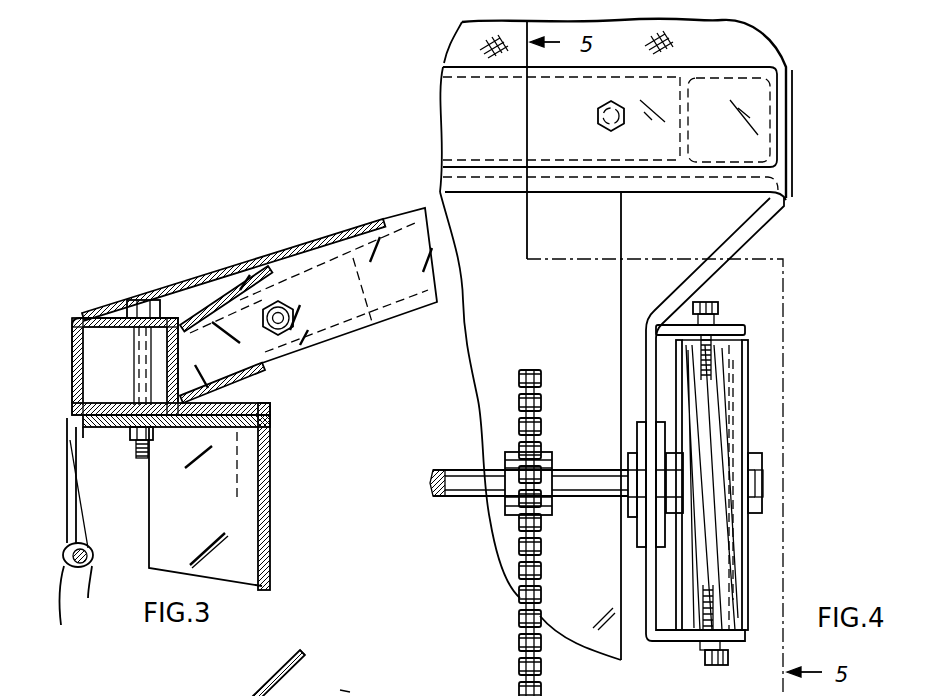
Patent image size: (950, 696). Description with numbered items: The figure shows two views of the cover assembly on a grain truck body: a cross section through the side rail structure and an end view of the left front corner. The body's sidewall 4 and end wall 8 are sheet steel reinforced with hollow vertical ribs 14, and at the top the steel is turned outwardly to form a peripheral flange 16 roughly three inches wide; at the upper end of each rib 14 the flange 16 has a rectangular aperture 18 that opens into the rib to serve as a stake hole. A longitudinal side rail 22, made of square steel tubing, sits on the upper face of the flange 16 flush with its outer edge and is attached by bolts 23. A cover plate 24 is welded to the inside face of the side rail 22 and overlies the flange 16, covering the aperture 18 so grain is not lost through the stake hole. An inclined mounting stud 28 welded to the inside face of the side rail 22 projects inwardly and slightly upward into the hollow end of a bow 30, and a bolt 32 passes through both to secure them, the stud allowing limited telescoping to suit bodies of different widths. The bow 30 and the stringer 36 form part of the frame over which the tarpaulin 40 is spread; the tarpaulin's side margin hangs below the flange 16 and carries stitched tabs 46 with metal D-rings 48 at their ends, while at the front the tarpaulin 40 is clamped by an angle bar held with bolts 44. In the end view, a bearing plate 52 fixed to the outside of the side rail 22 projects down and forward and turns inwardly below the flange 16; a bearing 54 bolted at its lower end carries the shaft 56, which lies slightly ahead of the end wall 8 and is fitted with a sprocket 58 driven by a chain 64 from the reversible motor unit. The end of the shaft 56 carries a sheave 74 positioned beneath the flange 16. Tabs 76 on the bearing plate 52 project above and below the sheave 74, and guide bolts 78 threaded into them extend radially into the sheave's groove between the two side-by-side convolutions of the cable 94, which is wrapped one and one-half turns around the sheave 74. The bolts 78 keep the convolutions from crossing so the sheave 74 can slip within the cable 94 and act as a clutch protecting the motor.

In FIG. 3, the sidewall 4 is at (272, 521).
In FIG. 4, the end wall 8 is at (498, 372).
In FIG. 3, the vertical rib 14 is at (268, 552).
In FIG. 3, the peripheral flange 16 is at (205, 458).
In FIG. 4, the peripheral flange 16 is at (772, 183).
In FIG. 3, the rectangular aperture 18 is at (235, 475).
In FIG. 3, the side rail 22 is at (113, 313).
In FIG. 4, the side rail 22 is at (772, 121).
In FIG. 3, the bolt 23 is at (148, 303).
In FIG. 3, the cover plate 24 is at (262, 404).
In FIG. 3, the mounting stud 28 is at (252, 368).
In FIG. 3, the bow 30 is at (393, 228).
In FIG. 3, the bolt 32 is at (295, 311).
In FIG. 3, the stringer 36 is at (362, 688).
In FIG. 3, the tarpaulin 40 is at (213, 265).
In FIG. 4, the tarpaulin 40 is at (745, 48).
In FIG. 3, the bolt 44 is at (299, 673).
In FIG. 4, the bolt 44 is at (598, 117).
In FIG. 3, the tab 46 is at (77, 528).
In FIG. 3, the D-ring 48 is at (64, 608).
In FIG. 4, the bearing plate 52 is at (760, 222).
In FIG. 4, the bearing 54 is at (635, 505).
In FIG. 4, the shaft 56 is at (446, 494).
In FIG. 4, the sprocket 58 is at (517, 455).
In FIG. 4, the chain 64 is at (518, 642).
In FIG. 4, the sheave 74 is at (752, 392).
In FIG. 4, the tab 76 is at (747, 330).
In FIG. 4, the guide bolt 78 is at (718, 307).
In FIG. 3, the cable 94 is at (89, 570).
In FIG. 4, the cable 94 is at (727, 430).